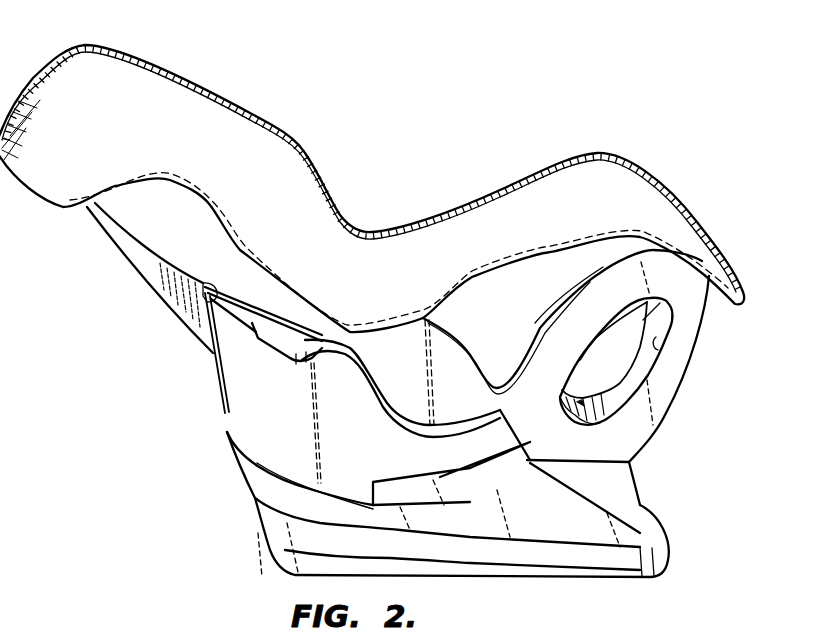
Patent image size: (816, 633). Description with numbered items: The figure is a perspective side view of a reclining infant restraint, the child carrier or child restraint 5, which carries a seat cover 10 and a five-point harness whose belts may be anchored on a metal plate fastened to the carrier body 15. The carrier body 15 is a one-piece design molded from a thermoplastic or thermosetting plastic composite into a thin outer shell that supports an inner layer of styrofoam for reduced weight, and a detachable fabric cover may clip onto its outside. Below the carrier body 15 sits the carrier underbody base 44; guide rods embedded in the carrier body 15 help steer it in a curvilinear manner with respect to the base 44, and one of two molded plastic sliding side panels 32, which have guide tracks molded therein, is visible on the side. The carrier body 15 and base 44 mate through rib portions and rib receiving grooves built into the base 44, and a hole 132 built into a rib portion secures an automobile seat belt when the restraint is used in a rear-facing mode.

The child restraint 5 is at (200, 51).
The seat cover 10 is at (302, 180).
The carrier body 15 is at (160, 232).
The sliding side panel 32 is at (279, 417).
The carrier underbody base 44 is at (283, 503).
The hole 132 is at (657, 338).